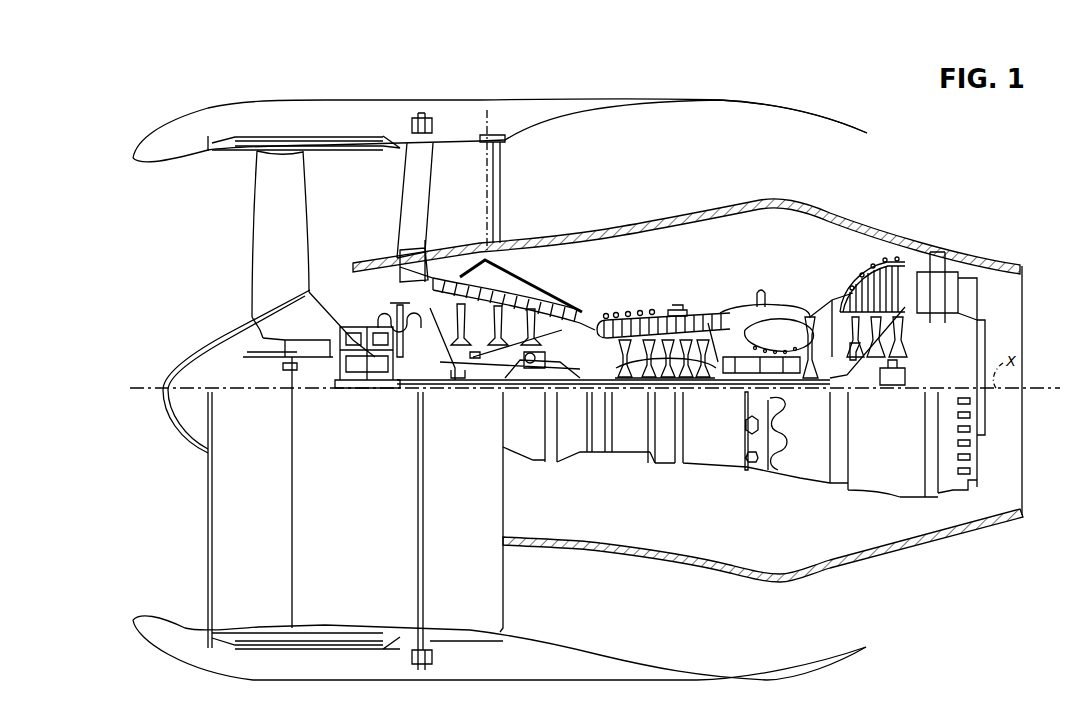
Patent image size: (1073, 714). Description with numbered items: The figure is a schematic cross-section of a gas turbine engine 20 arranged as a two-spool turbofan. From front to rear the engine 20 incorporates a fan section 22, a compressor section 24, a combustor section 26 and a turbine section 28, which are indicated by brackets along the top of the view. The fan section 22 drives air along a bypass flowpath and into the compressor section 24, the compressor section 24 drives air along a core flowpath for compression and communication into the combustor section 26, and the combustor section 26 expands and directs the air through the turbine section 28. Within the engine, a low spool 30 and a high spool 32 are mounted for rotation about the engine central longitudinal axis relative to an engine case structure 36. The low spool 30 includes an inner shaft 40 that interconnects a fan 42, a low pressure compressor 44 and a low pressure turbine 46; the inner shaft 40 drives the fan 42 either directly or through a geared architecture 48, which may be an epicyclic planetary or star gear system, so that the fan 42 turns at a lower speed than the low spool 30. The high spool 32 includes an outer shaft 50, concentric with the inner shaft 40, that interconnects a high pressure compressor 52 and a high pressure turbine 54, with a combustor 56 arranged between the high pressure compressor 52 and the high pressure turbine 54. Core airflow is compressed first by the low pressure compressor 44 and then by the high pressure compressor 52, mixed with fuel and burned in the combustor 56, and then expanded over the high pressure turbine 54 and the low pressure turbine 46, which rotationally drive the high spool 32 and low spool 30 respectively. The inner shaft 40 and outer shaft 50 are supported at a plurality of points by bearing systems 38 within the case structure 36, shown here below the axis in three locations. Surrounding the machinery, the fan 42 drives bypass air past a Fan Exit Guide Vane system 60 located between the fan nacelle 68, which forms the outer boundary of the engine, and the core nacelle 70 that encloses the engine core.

The gas turbine engine 20 is at (892, 163).
The fan section 22 is at (205, 103).
The compressor section 24 is at (690, 193).
The combustor section 26 is at (775, 193).
The turbine section 28 is at (937, 192).
The low spool 30 is at (558, 362).
The high spool 32 is at (711, 360).
The engine case structure 36 is at (668, 462).
The bearing systems 38 is at (413, 437).
The inner shaft 40 is at (793, 378).
The fan 42 is at (291, 249).
The low pressure compressor 44 is at (523, 292).
The low pressure turbine 46 is at (880, 293).
The geared architecture 48 is at (360, 363).
The outer shaft 50 is at (807, 360).
The high pressure compressor 52 is at (618, 334).
The high pressure turbine 54 is at (815, 382).
The combustor 56 is at (769, 330).
The Fan Exit Guide Vane system 60 is at (406, 222).
The fan nacelle 68 is at (578, 103).
The core nacelle 70 is at (957, 212).